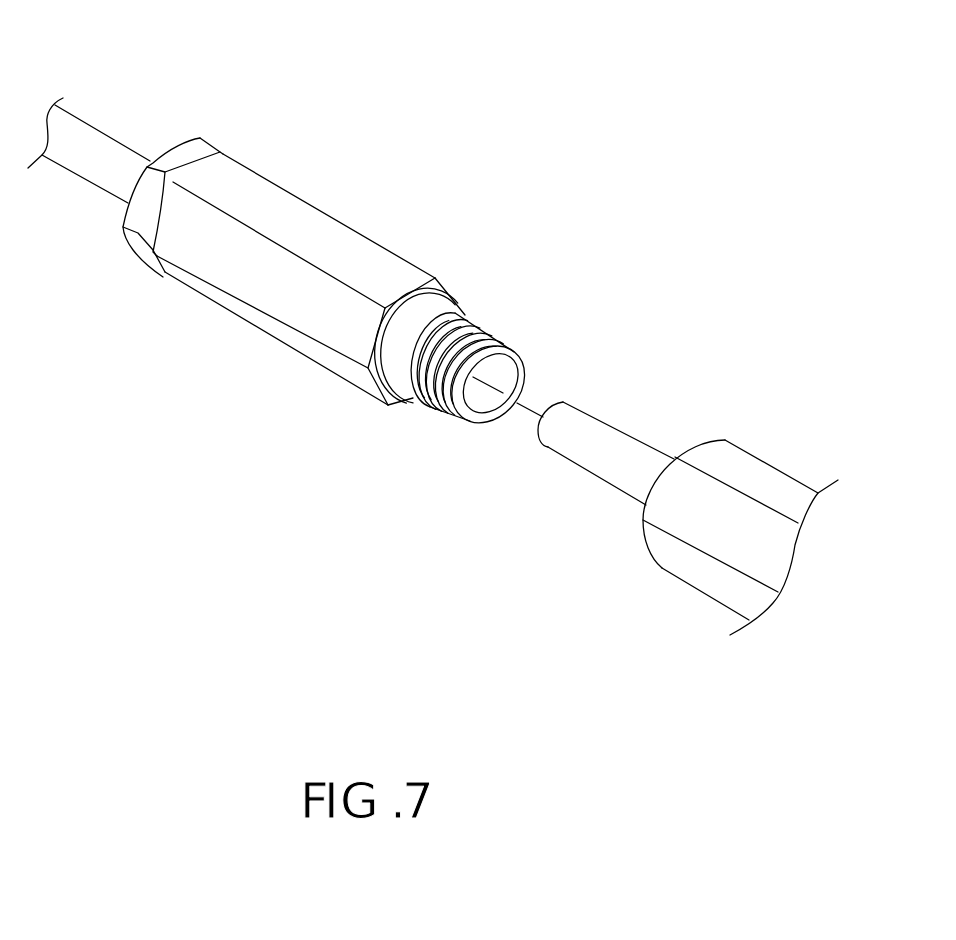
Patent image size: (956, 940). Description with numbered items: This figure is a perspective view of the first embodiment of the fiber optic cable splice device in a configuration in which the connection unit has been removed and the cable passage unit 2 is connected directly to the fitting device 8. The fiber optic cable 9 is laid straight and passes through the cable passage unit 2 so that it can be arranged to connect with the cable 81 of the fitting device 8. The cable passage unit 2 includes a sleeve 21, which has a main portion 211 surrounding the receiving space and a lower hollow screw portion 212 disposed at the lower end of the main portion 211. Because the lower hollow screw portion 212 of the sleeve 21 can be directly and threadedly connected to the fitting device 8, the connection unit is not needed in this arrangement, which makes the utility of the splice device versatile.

The cable passage unit 2 is at (354, 270).
The sleeve 21 is at (302, 266).
The main portion 211 is at (305, 202).
The lower hollow screw portion 212 is at (487, 333).
The fitting device 8 is at (677, 515).
The cable 81 is at (592, 460).
The fiber optic cable 9 is at (88, 127).